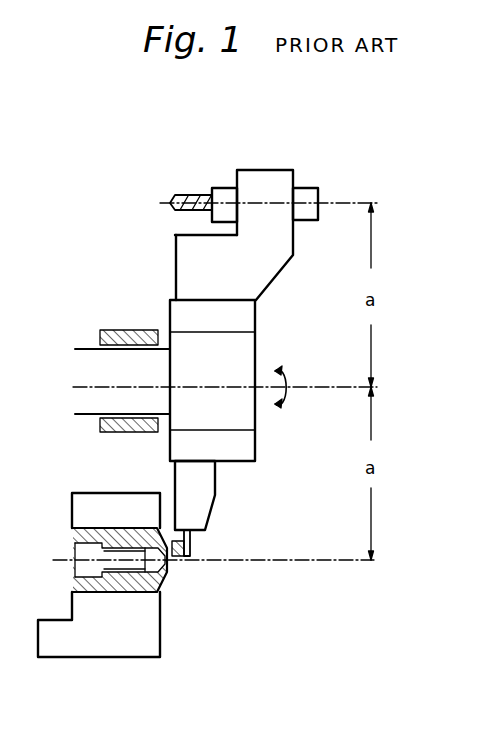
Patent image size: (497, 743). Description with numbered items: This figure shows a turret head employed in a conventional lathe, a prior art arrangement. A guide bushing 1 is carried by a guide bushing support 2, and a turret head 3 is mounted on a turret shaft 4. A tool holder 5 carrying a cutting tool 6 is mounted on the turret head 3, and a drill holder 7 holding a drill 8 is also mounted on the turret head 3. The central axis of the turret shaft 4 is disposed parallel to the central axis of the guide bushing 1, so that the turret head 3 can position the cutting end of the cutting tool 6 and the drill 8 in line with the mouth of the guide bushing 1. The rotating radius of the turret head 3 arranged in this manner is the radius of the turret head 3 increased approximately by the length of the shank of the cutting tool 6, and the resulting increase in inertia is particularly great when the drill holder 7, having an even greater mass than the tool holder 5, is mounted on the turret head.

The guide bushing 1 is at (163, 568).
The guide bushing support 2 is at (155, 633).
The turret head 3 is at (254, 449).
The turret shaft 4 is at (88, 358).
The tool holder 5 is at (209, 493).
The cutting tool 6 is at (190, 548).
The drill holder 7 is at (257, 174).
The drill 8 is at (180, 193).